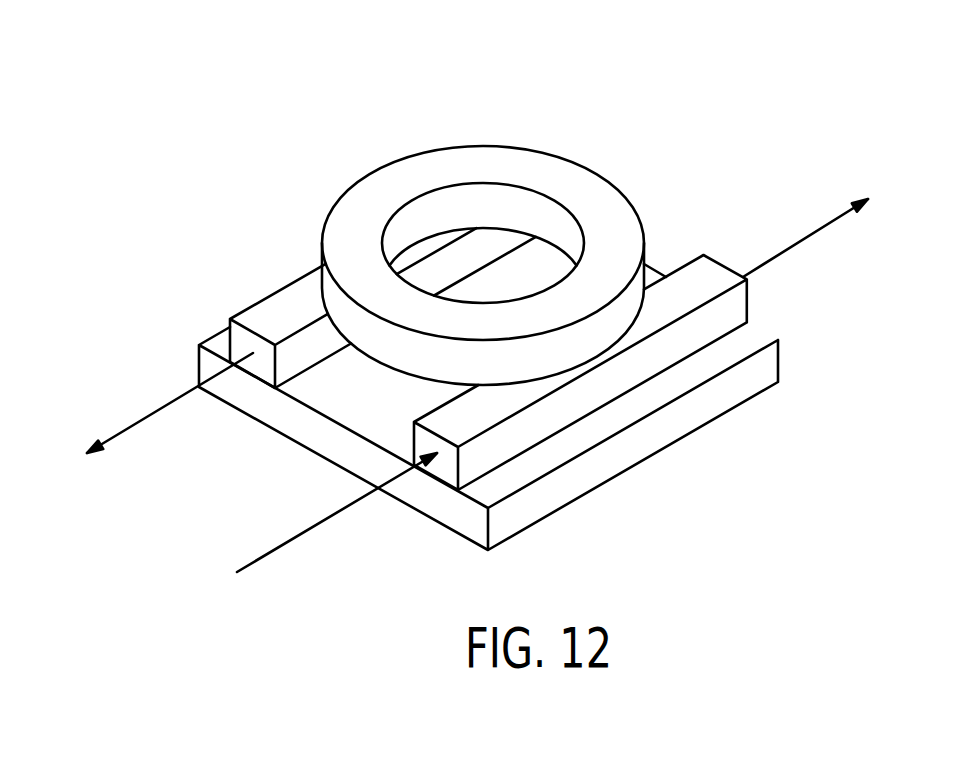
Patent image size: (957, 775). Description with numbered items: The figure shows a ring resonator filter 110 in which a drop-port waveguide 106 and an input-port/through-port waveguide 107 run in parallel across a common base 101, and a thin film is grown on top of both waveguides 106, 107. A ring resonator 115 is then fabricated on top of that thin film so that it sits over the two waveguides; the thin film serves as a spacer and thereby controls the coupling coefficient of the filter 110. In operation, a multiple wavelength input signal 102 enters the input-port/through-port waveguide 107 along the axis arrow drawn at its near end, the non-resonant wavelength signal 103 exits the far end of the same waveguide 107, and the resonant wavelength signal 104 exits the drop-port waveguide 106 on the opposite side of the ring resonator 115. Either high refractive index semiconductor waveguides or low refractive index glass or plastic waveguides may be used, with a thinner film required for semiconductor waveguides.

The substrate 101 is at (768, 369).
The multiple wavelength input signal 102 is at (307, 532).
The non-resonant wavelength signal 103 is at (800, 245).
The resonant wavelength signal 104 is at (150, 417).
The drop-port waveguide 106 is at (268, 317).
The input-port/through-port waveguide 107 is at (692, 277).
The ring resonator filter 110 is at (477, 226).
The ring resonator 115 is at (346, 215).